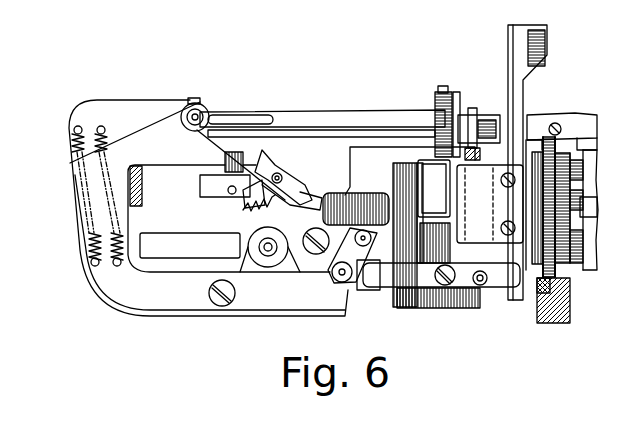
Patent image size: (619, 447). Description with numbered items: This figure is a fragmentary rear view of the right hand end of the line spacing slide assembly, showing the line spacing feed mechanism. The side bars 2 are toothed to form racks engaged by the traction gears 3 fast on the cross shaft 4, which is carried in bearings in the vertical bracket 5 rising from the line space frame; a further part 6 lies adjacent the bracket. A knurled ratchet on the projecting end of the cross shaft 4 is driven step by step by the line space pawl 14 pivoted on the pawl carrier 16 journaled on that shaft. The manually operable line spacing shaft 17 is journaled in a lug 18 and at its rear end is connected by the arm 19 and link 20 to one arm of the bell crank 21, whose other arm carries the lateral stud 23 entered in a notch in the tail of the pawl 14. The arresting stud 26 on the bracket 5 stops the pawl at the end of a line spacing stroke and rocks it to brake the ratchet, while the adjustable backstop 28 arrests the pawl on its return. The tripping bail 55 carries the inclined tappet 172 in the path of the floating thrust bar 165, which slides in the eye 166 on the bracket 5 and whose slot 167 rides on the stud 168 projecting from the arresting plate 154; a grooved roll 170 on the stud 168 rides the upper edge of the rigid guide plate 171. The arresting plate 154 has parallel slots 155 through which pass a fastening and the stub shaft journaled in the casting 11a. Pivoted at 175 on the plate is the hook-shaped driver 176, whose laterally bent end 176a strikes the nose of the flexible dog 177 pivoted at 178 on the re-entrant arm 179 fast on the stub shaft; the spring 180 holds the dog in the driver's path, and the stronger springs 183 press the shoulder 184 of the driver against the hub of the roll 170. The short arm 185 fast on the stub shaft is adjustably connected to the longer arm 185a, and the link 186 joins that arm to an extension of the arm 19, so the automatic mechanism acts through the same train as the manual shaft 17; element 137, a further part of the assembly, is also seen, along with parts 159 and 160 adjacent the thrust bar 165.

The side bars 2 is at (560, 310).
The traction gears 3 is at (543, 270).
The cross shaft 4 is at (587, 255).
The vertical bracket 5 is at (508, 50).
The bracket plate 6 is at (570, 150).
The casting 11a is at (380, 182).
The line space pawl 14 is at (432, 104).
The pawl carrier 16 is at (432, 135).
The line spacing shaft 17 is at (444, 287).
The lug 18 is at (430, 308).
The arm 19 is at (475, 288).
The link 20 is at (505, 290).
The bell crank 21 is at (456, 92).
The lateral stud 23 is at (440, 92).
The arresting stud 26 is at (492, 124).
The adjustable backstop 28 is at (432, 160).
The tripping bail 55 is at (585, 120).
The disk 137 is at (262, 268).
The arresting plate 154 is at (134, 100).
The parallel slots 155 is at (176, 252).
The block 159 is at (250, 165).
The plate 160 is at (410, 162).
The thrust bar 165 is at (330, 110).
The eye 166 is at (472, 108).
The slot 167 is at (224, 112).
The stud 168 is at (194, 103).
The grooved roll 170 is at (202, 100).
The guide plate 171 is at (318, 134).
The inclined tappet 172 is at (551, 111).
The pivot 175 is at (222, 306).
The driver 176 is at (123, 288).
The laterally bent end 176a is at (222, 172).
The flexible dog 177 is at (290, 162).
The pivot 178 is at (298, 178).
The re-entrant arm 179 is at (243, 197).
The spring 180 is at (243, 210).
The springs 183 is at (70, 163).
The shoulder 184 is at (190, 145).
The short arm 185 is at (316, 255).
The longer arm 185a is at (330, 284).
The link 186 is at (362, 290).